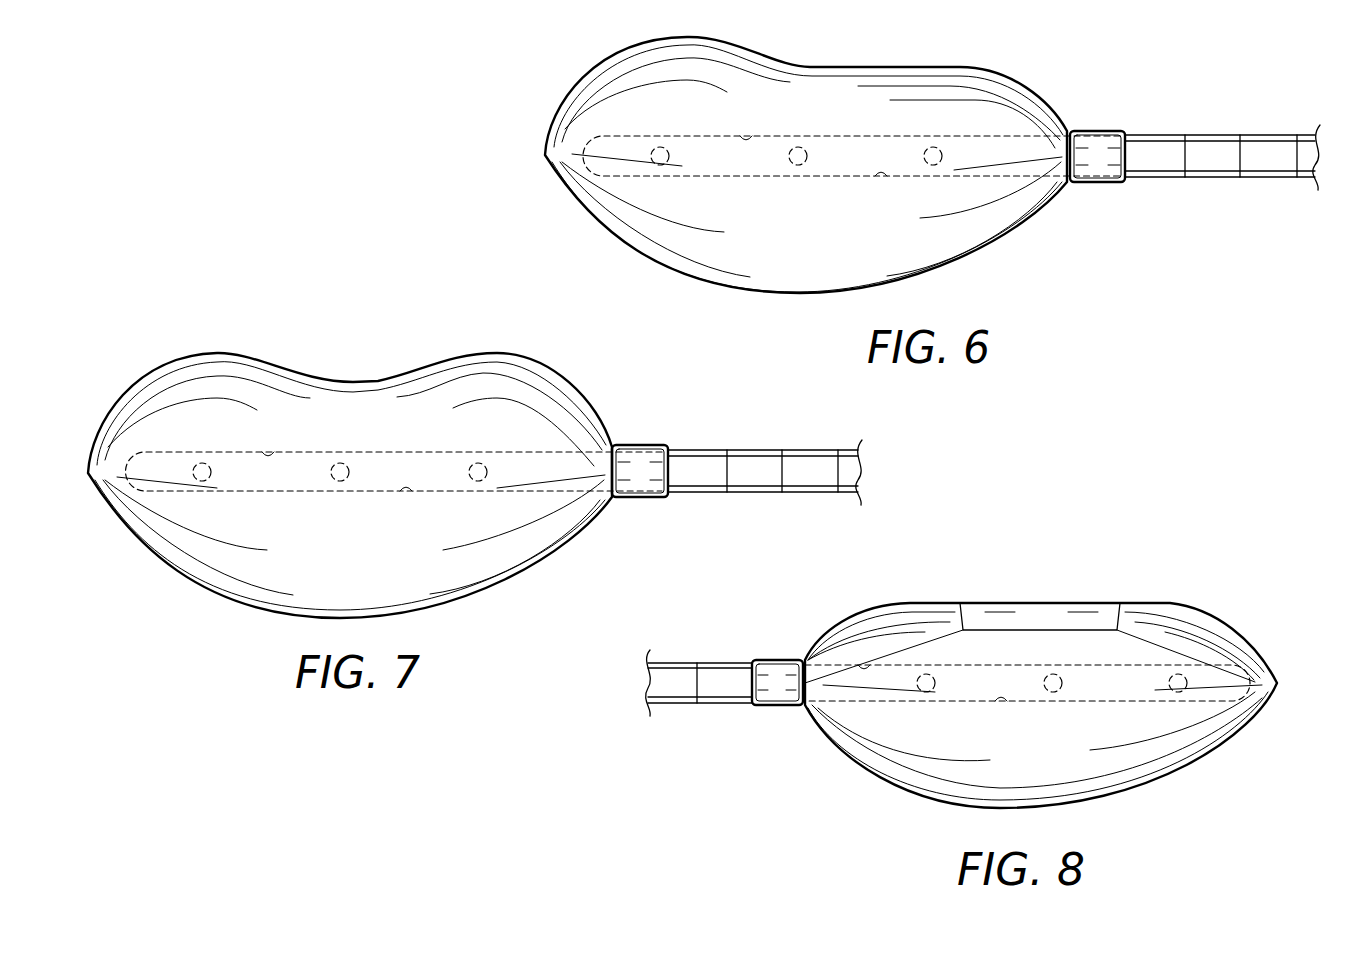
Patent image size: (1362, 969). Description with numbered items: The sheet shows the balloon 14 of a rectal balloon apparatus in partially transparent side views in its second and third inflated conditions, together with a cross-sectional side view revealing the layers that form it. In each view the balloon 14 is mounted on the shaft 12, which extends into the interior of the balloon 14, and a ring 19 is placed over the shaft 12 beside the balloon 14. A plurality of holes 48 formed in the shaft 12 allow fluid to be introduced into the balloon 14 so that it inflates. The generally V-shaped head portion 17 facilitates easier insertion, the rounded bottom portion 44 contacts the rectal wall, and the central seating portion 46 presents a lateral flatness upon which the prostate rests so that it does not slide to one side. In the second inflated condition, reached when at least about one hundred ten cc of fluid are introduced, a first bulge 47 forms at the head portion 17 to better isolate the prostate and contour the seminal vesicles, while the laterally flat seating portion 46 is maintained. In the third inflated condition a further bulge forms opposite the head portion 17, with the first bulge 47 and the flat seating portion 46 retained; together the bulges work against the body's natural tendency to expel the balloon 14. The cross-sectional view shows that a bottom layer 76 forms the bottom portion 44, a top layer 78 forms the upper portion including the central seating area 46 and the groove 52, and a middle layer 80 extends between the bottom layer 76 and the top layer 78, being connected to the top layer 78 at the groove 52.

In FIG. 6, the shaft 12 is at (808, 135).
In FIG. 7, the shaft 12 is at (348, 450).
In FIG. 8, the shaft 12 is at (683, 705).
In FIG. 6, the balloon 14 is at (985, 65).
In FIG. 7, the balloon 14 is at (572, 387).
In FIG. 8, the balloon 14 is at (1258, 640).
In FIG. 6, the head portion 17 is at (547, 143).
In FIG. 7, the head portion 17 is at (95, 458).
In FIG. 6, the ring 19 is at (1098, 130).
In FIG. 7, the ring 19 is at (640, 445).
In FIG. 8, the ring 19 is at (777, 660).
In FIG. 6, the bottom portion 44 is at (657, 250).
In FIG. 7, the bottom portion 44 is at (185, 570).
In FIG. 8, the bottom portion 44 is at (1165, 782).
In FIG. 6, the central seating portion 46 is at (815, 65).
In FIG. 7, the central seating portion 46 is at (313, 378).
In FIG. 8, the central seating portion 46 is at (900, 600).
In FIG. 6, the first bulge 47 is at (637, 42).
In FIG. 7, the first bulge 47 is at (213, 352).
In FIG. 6, the holes 48 is at (797, 165).
In FIG. 7, the holes 48 is at (337, 480).
In FIG. 8, the groove 52 is at (1022, 602).
In FIG. 8, the bottom layer 76 is at (1248, 722).
In FIG. 8, the top layer 78 is at (1165, 600).
In FIG. 8, the middle layer 80 is at (918, 652).